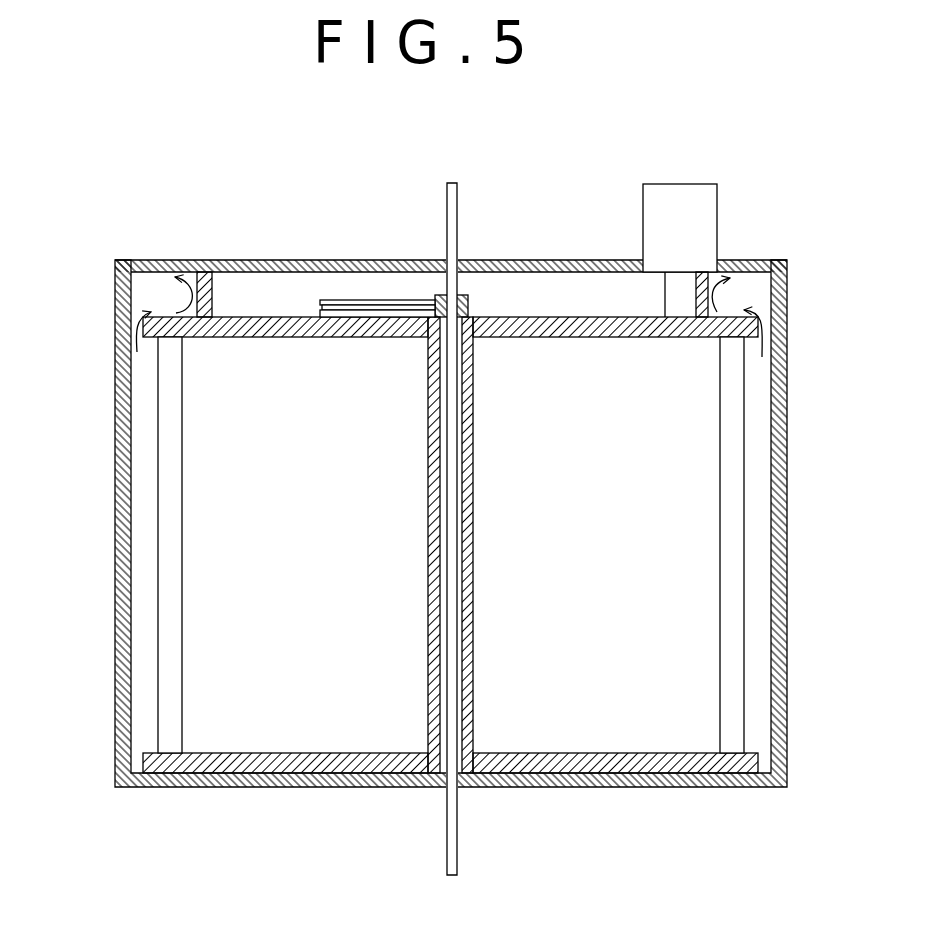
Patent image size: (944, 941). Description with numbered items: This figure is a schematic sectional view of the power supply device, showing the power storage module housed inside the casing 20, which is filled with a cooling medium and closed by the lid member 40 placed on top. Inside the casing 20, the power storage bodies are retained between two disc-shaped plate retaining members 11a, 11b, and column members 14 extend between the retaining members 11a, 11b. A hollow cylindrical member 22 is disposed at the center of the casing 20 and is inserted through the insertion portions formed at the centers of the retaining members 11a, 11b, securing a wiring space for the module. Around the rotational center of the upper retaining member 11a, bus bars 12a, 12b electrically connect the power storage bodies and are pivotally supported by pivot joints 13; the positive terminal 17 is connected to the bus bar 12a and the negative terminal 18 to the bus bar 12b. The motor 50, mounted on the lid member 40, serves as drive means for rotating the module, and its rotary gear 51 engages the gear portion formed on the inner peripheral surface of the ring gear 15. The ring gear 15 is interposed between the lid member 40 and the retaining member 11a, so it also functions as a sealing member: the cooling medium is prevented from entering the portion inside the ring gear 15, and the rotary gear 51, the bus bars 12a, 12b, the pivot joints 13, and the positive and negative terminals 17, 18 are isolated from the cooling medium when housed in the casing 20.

The retaining member 11a is at (577, 318).
The retaining member 11b is at (588, 787).
The bus bar 12a is at (378, 300).
The bus bar 12b is at (320, 306).
The pivot joint 13 is at (465, 295).
The column member 14 is at (166, 558).
The ring gear 15 is at (203, 272).
The positive terminal 17 is at (452, 213).
The negative terminal 18 is at (452, 835).
The casing 20 is at (113, 290).
The hollow cylindrical member 22 is at (427, 732).
The lid member 40 is at (137, 257).
The motor 50 is at (700, 212).
The rotary gear 51 is at (670, 305).